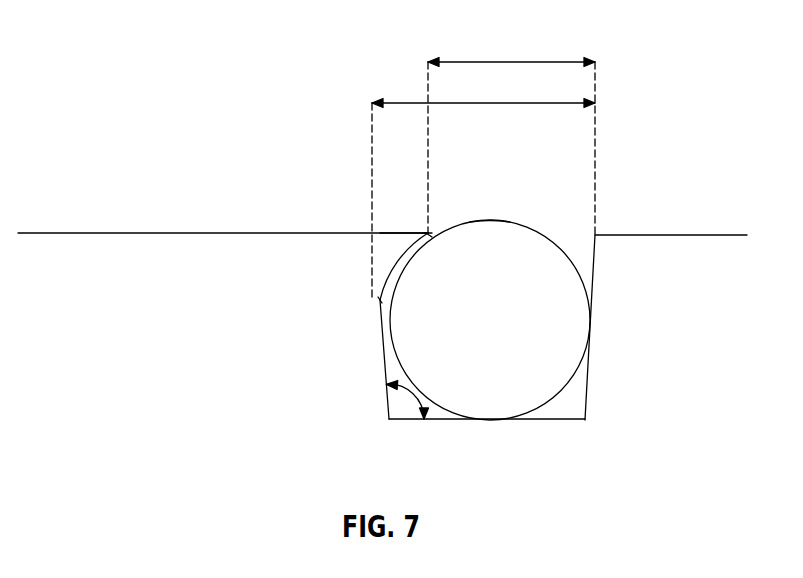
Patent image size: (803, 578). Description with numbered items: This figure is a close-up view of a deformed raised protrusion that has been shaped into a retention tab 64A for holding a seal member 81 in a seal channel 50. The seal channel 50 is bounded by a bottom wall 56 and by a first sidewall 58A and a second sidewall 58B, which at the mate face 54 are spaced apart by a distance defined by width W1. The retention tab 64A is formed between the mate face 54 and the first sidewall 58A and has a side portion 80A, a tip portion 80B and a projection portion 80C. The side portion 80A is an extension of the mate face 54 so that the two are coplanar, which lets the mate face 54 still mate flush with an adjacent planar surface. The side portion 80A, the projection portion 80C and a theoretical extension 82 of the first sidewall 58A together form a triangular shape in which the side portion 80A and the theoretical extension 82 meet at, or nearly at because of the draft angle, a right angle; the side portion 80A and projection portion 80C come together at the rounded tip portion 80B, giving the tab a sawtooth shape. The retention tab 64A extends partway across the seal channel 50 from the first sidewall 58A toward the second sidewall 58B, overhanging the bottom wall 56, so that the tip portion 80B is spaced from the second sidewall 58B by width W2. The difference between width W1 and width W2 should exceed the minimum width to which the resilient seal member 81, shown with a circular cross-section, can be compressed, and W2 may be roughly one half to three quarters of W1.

The seal channel 50 is at (572, 242).
The mate face 54 is at (100, 232).
The bottom wall 56 is at (415, 420).
The first sidewall 58A is at (382, 360).
The second sidewall 58B is at (588, 378).
The retention tab 64A is at (416, 220).
The side portion 80A is at (382, 231).
The tip portion 80B is at (432, 236).
The projection portion 80C is at (392, 275).
The seal member 81 is at (490, 220).
The theoretical extension 82 is at (372, 292).
The width W1 is at (495, 103).
The width W2 is at (505, 62).